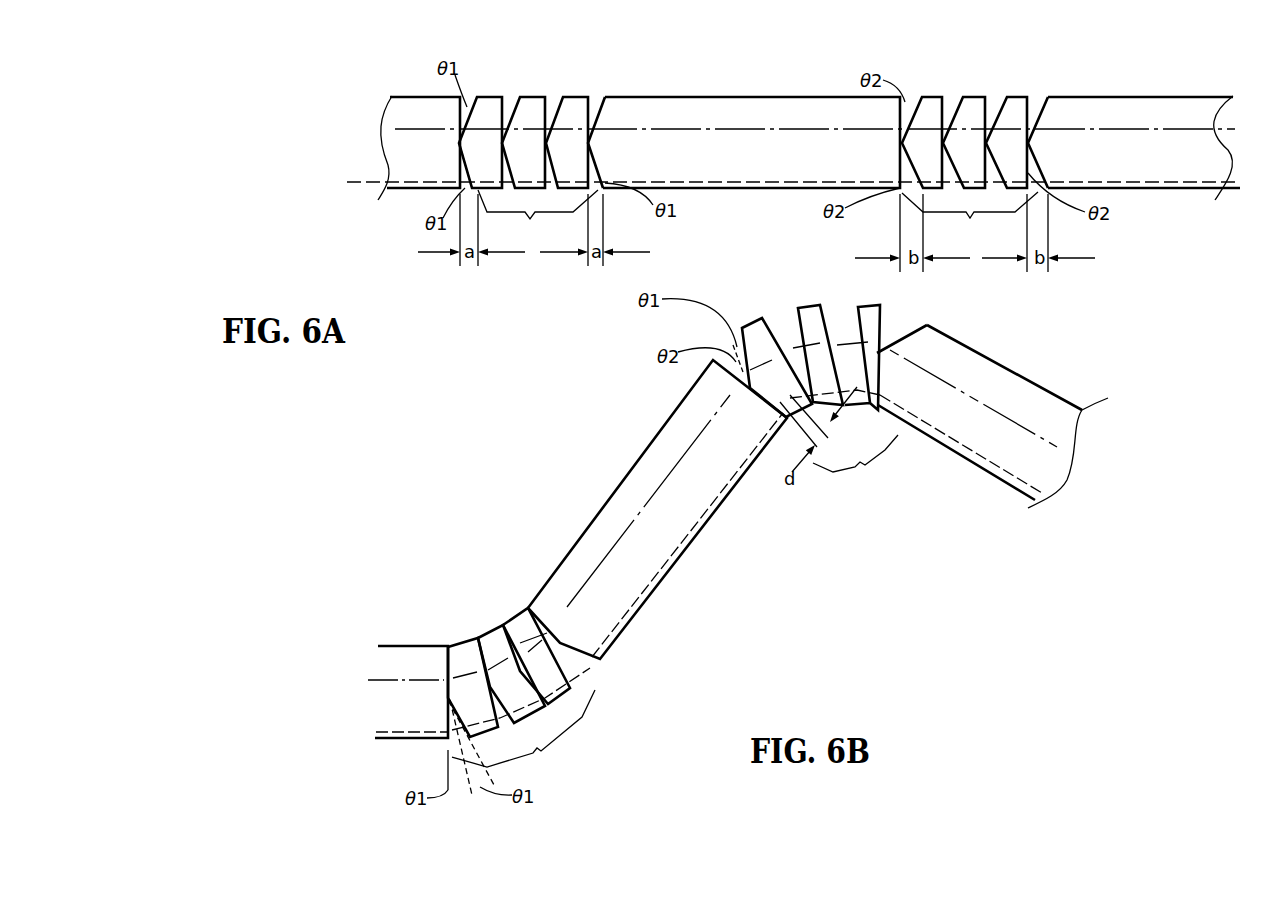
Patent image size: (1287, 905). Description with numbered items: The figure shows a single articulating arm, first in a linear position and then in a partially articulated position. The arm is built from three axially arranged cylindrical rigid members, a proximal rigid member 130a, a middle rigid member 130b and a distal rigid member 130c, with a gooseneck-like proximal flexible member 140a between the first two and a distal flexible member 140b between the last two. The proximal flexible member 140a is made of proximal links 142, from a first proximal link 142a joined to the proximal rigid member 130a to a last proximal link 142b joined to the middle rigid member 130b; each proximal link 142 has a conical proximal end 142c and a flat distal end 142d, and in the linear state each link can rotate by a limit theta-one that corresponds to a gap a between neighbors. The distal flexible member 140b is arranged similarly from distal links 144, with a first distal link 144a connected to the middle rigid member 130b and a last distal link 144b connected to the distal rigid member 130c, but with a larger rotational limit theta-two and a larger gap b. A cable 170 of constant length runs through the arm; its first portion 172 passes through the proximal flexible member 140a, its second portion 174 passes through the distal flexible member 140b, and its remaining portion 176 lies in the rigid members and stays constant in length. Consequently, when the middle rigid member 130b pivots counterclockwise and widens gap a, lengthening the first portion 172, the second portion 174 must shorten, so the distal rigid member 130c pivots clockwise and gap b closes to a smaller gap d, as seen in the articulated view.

In FIG. 6A, the proximal rigid member 130a is at (393, 170).
In FIG. 6B, the proximal rigid member 130a is at (408, 652).
In FIG. 6A, the middle rigid member 130b is at (678, 167).
In FIG. 6B, the middle rigid member 130b is at (600, 530).
In FIG. 6A, the distal rigid member 130c is at (1130, 170).
In FIG. 6B, the distal rigid member 130c is at (975, 433).
In FIG. 6A, the proximal flexible member 140a is at (477, 78).
In FIG. 6B, the proximal flexible member 140a is at (622, 720).
In FIG. 6A, the distal flexible member 140b is at (917, 77).
In FIG. 6B, the distal flexible member 140b is at (806, 526).
In FIG. 6A, the proximal links 142 is at (519, 96).
In FIG. 6B, the proximal links 142 is at (527, 596).
In FIG. 6A, the first proximal link 142a is at (488, 100).
In FIG. 6A, the last proximal link 142b is at (573, 103).
In FIG. 6A, the conical proximal end 142c is at (470, 143).
In FIG. 6A, the flat distal end 142d is at (624, 128).
In FIG. 6A, the distal links 144 is at (989, 98).
In FIG. 6B, the distal links 144 is at (878, 297).
In FIG. 6A, the first distal link 144a is at (932, 107).
In FIG. 6A, the last distal link 144b is at (1028, 122).
In FIG. 6A, the cable 170 is at (349, 182).
In FIG. 6B, the cable 170 is at (375, 733).
In FIG. 6A, the first portion 172 is at (538, 218).
In FIG. 6B, the first portion 172 is at (523, 733).
In FIG. 6A, the second portion 174 is at (970, 219).
In FIG. 6B, the second portion 174 is at (855, 462).
In FIG. 6A, the remaining portion 176 is at (782, 178).